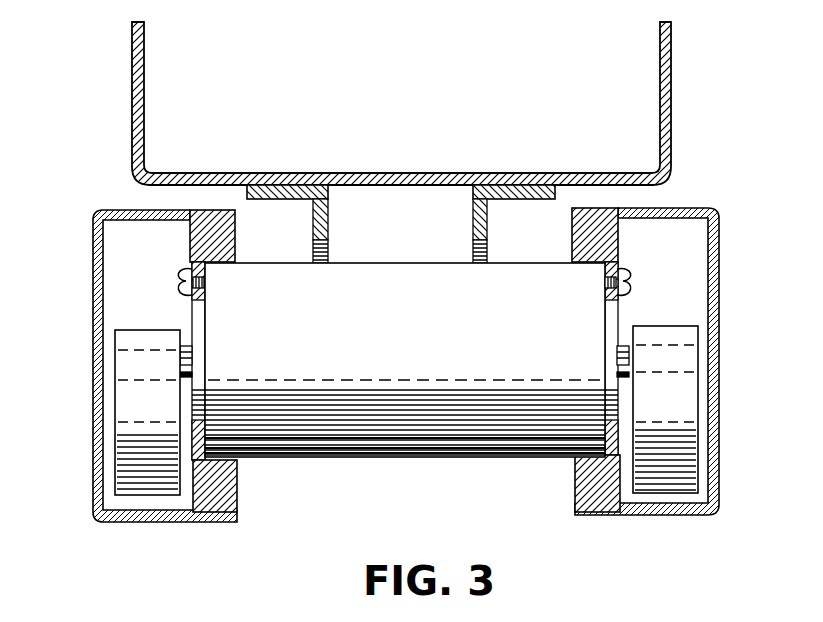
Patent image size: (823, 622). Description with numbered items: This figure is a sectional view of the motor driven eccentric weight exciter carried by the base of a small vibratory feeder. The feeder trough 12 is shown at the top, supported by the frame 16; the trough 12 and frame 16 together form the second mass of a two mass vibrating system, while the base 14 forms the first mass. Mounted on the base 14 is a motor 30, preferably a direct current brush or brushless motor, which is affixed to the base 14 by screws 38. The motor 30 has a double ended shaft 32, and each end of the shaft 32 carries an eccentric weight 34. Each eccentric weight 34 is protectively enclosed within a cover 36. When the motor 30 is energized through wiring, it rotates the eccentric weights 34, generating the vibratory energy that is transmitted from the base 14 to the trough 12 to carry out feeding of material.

The feeder trough 12 is at (672, 44).
The base 14 is at (218, 510).
The frame 16 is at (473, 218).
The motor 30 is at (366, 458).
The double ended shaft 32 is at (186, 348).
The eccentric weight 34 is at (115, 458).
The cover 36 is at (93, 238).
The screws 38 is at (183, 272).